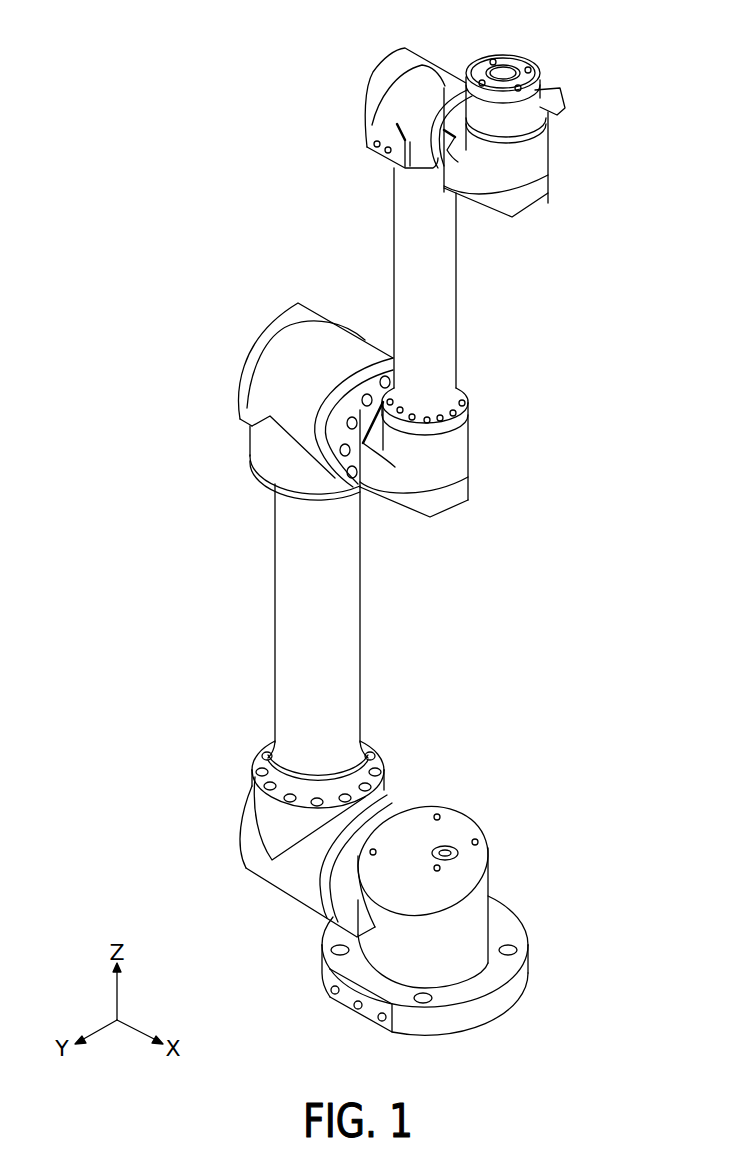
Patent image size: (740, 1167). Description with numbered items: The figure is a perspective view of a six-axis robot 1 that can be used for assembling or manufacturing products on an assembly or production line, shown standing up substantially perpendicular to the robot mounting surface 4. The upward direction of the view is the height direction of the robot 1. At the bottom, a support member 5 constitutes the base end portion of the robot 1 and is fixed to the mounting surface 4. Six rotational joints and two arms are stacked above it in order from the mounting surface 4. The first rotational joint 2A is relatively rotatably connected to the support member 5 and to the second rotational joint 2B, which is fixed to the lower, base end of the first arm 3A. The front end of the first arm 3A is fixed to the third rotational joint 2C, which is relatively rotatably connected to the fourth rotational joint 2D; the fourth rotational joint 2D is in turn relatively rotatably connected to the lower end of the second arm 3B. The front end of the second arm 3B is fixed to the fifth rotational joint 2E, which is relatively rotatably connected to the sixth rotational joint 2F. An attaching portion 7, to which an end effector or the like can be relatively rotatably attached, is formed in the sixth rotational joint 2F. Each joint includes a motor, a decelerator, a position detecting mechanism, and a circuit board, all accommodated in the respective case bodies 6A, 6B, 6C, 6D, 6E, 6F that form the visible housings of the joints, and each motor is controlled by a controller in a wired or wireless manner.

The robot 1 is at (273, 63).
The first rotational joint 2A is at (478, 923).
The second rotational joint 2B is at (283, 880).
The third rotational joint 2C is at (341, 338).
The fourth rotational joint 2D is at (460, 445).
The fifth rotational joint 2E is at (441, 76).
The sixth rotational joint 2F is at (542, 149).
The first arm 3A is at (348, 603).
The second arm 3B is at (446, 292).
The robot mounting surface 4 is at (619, 1017).
The support member 5 is at (474, 1018).
The case body 6A is at (478, 877).
The case body 6B is at (246, 823).
The case body 6C is at (280, 318).
The case body 6D is at (460, 488).
The case body 6E is at (368, 94).
The case body 6F is at (543, 185).
The attaching portion 7 is at (504, 55).